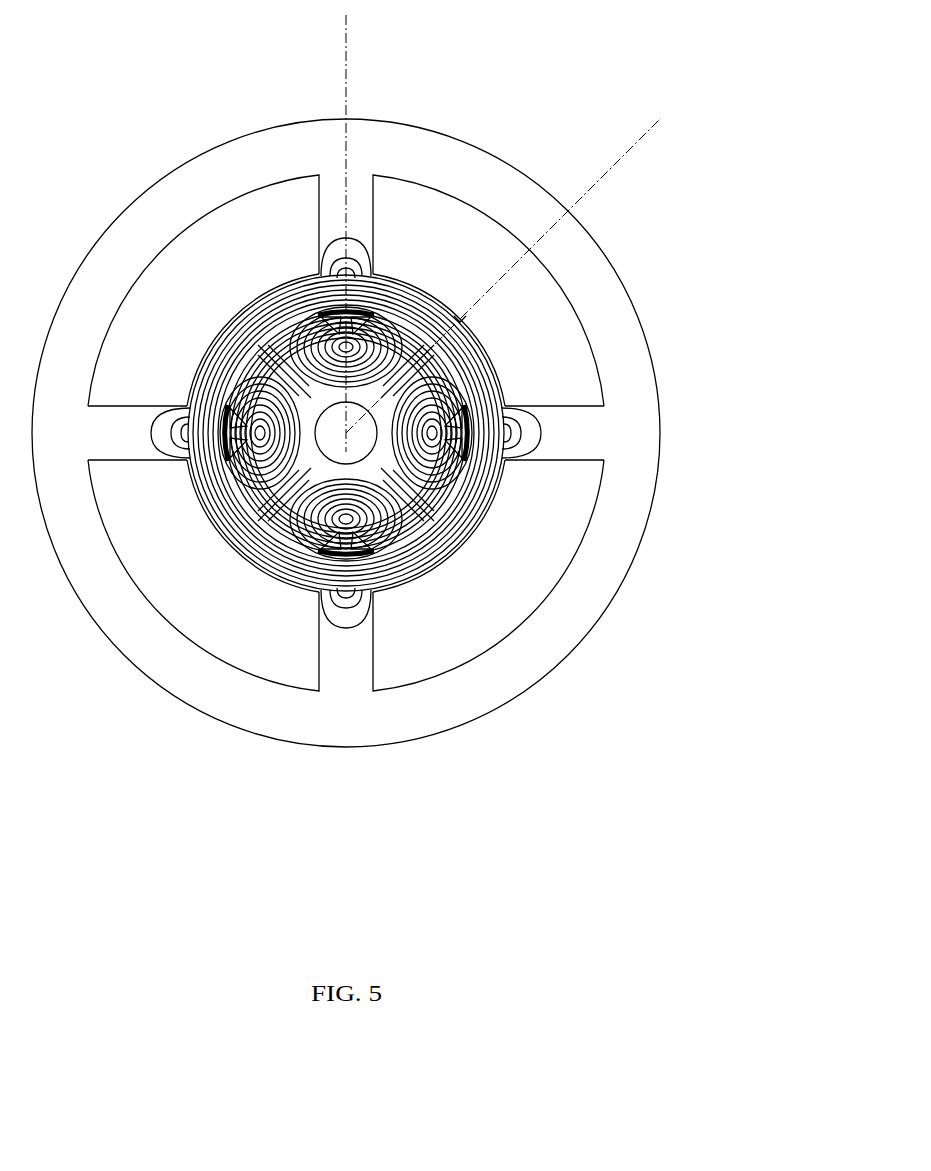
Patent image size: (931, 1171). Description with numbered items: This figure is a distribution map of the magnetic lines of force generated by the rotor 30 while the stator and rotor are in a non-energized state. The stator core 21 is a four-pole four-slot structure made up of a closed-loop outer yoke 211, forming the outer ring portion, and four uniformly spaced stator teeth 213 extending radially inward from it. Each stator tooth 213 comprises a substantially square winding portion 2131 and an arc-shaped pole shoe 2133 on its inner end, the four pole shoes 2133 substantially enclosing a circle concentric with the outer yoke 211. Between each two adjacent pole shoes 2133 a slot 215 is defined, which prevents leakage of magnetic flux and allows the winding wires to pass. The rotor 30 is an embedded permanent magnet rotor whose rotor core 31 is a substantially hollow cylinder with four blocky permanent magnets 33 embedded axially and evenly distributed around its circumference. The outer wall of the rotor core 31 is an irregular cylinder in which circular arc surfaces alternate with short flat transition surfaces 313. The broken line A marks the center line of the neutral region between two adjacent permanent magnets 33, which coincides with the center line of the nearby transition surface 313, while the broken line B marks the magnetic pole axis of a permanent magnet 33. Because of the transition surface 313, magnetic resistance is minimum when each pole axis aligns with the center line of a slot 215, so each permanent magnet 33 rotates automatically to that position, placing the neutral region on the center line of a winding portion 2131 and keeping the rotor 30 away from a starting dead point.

The stator core 21 is at (413, 836).
The outer yoke 211 is at (420, 715).
The stator teeth 213 is at (370, 797).
The winding portion 2131 is at (355, 663).
The pole shoe 2133 is at (263, 568).
The slot 215 is at (458, 317).
The rotor 30 is at (232, 86).
The rotor core 31 is at (298, 354).
The transition surface 313 is at (470, 425).
The permanent magnet 33 is at (232, 388).
The broken line A is at (337, 71).
The broken line B is at (644, 129).